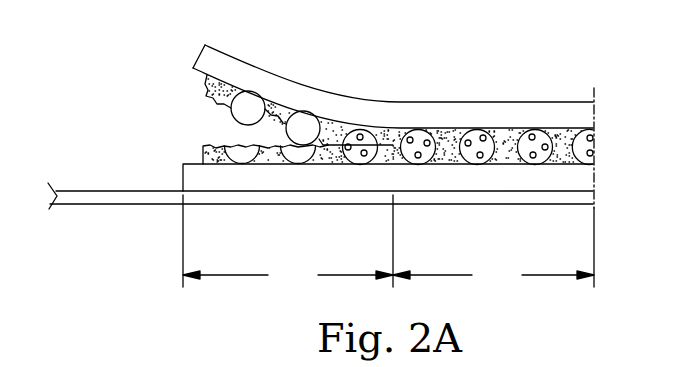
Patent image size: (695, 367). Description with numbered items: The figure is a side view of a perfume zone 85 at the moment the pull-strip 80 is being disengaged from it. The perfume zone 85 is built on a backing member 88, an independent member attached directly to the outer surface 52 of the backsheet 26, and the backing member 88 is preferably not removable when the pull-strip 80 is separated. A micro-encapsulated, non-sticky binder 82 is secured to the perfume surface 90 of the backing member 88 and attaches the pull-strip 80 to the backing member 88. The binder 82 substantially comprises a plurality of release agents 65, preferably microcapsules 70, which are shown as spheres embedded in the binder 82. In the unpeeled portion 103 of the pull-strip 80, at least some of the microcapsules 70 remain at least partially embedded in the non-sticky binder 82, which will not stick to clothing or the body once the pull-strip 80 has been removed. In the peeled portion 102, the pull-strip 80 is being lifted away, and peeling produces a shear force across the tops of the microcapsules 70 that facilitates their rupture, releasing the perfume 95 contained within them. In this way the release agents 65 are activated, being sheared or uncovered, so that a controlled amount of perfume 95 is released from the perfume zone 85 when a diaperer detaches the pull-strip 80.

The backsheet 26 is at (87, 190).
The outer surface 52 is at (70, 190).
The release agents 65 is at (398, 134).
The microcapsules 70 is at (418, 129).
The pull-strip 80 is at (238, 70).
The binder 82 is at (207, 87).
The perfume zone 85 is at (572, 78).
The backing member 88 is at (480, 183).
The perfume surface 90 is at (199, 161).
The perfume 95 is at (534, 129).
The peeled portion 102 is at (288, 243).
The unpeeled portion 103 is at (493, 249).